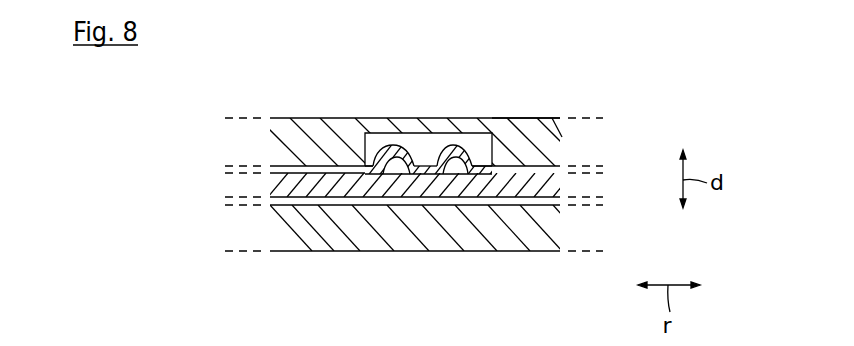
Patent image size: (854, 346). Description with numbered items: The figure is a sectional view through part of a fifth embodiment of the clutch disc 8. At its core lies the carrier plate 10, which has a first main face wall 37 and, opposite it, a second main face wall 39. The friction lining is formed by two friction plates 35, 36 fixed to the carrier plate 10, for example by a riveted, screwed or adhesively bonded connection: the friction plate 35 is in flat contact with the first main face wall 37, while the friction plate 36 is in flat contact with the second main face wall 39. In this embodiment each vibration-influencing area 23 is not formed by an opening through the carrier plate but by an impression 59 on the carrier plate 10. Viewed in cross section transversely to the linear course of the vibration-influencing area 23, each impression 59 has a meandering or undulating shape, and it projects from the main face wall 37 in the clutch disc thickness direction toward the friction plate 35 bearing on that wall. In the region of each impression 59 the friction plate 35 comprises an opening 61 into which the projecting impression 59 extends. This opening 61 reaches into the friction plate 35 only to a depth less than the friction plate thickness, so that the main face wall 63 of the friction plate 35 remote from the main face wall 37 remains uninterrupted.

The clutch disc 8 is at (645, 103).
The carrier plate 10 is at (489, 182).
The vibration-influencing area 23 is at (381, 109).
The friction plate 35 is at (533, 118).
The friction plate 36 is at (507, 245).
The first main face wall 37 is at (299, 173).
The second main face wall 39 is at (313, 185).
The impression 59 is at (430, 149).
The opening 61 is at (481, 140).
The main face wall 63 is at (552, 117).